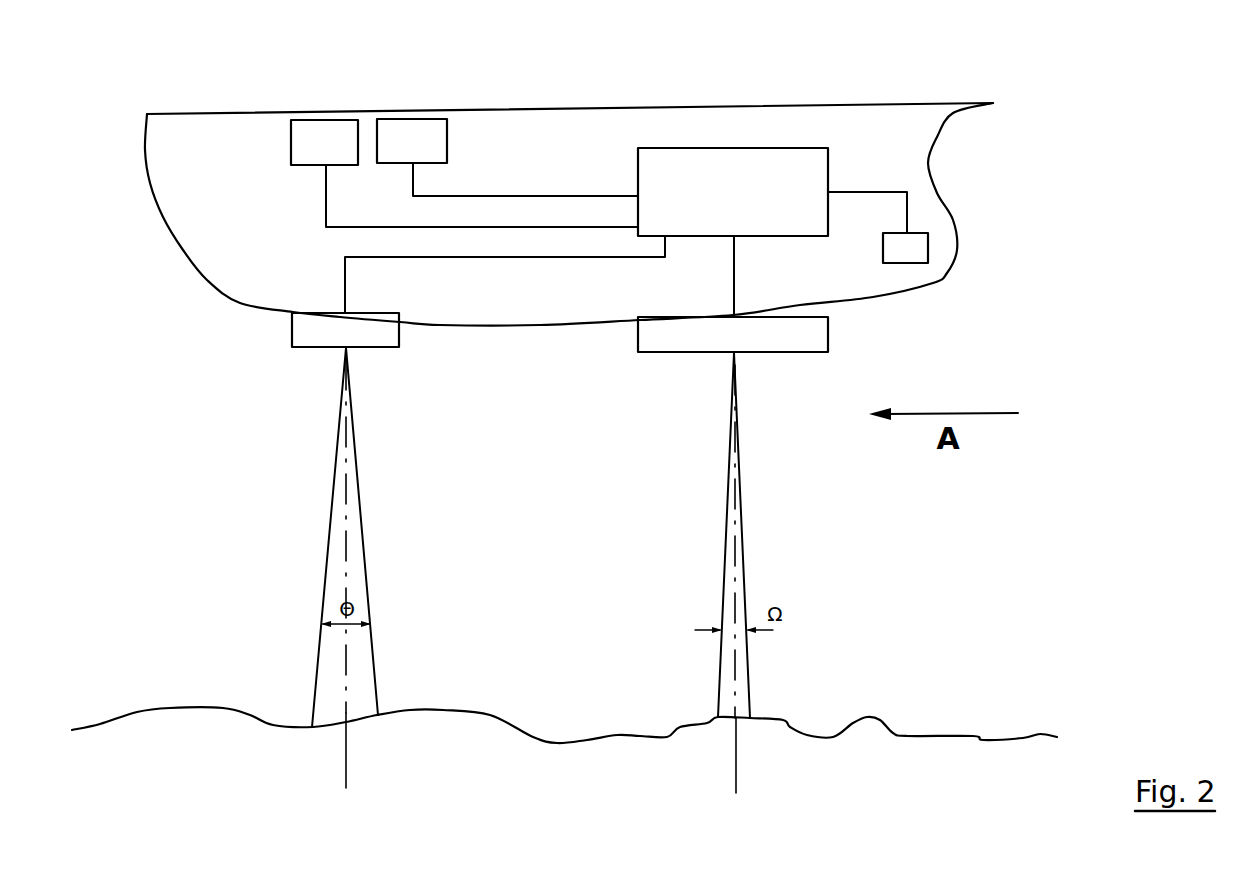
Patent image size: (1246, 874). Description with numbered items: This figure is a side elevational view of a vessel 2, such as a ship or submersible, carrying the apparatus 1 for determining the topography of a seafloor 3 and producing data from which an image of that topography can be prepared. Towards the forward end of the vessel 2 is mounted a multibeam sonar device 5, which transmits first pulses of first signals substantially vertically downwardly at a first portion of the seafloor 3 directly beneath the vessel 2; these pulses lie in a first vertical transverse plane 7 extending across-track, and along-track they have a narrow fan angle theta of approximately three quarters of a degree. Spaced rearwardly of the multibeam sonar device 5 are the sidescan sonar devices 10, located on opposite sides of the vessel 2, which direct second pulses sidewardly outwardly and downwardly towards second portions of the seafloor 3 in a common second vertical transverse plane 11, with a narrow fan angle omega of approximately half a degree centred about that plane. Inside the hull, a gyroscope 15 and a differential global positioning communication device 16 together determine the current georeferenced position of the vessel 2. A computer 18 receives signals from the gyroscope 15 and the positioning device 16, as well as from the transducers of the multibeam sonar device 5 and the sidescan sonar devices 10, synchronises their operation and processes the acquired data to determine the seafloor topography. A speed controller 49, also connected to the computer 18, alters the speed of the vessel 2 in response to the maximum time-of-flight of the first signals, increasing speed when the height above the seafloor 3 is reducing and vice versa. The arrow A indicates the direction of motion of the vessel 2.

The apparatus 1 is at (670, 130).
The vessel 2 is at (573, 130).
The seafloor 3 is at (907, 735).
The multibeam sonar device 5 is at (320, 332).
The first vertical transverse plane 7 is at (350, 763).
The sidescan sonar devices 10 is at (695, 340).
The second vertical transverse plane 11 is at (737, 765).
The gyroscope 15 is at (412, 140).
The differential global positioning communication device 16 is at (333, 140).
The computer 18 is at (780, 213).
The speed controller 49 is at (915, 247).